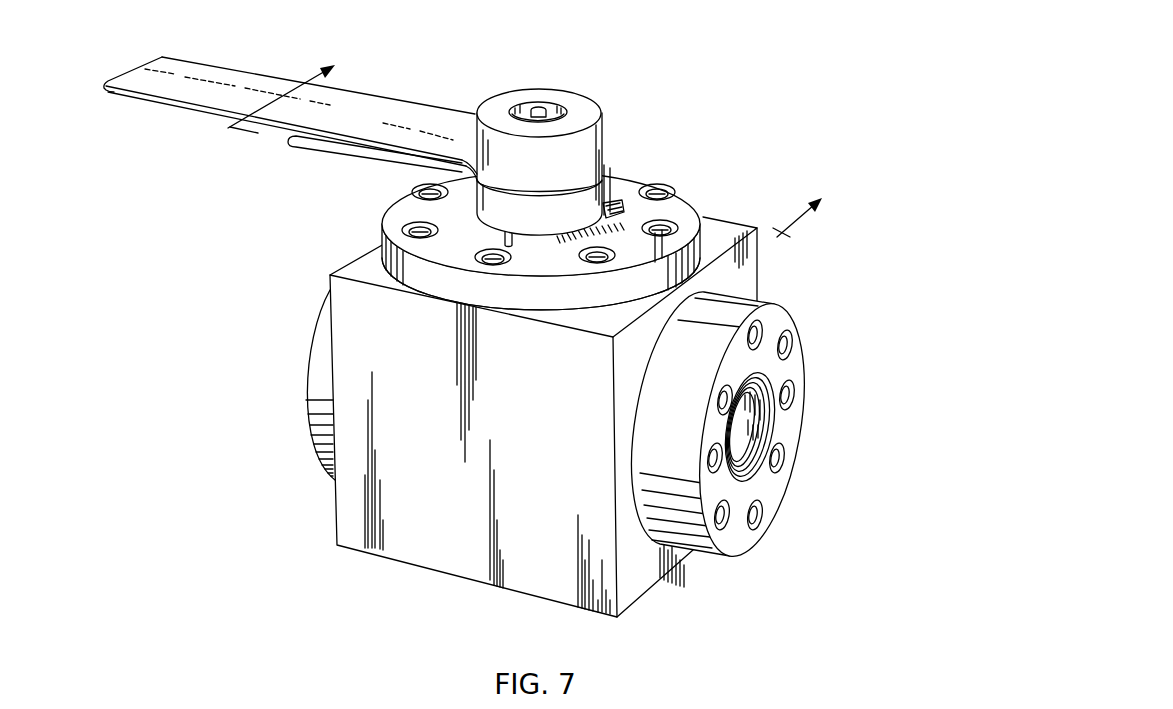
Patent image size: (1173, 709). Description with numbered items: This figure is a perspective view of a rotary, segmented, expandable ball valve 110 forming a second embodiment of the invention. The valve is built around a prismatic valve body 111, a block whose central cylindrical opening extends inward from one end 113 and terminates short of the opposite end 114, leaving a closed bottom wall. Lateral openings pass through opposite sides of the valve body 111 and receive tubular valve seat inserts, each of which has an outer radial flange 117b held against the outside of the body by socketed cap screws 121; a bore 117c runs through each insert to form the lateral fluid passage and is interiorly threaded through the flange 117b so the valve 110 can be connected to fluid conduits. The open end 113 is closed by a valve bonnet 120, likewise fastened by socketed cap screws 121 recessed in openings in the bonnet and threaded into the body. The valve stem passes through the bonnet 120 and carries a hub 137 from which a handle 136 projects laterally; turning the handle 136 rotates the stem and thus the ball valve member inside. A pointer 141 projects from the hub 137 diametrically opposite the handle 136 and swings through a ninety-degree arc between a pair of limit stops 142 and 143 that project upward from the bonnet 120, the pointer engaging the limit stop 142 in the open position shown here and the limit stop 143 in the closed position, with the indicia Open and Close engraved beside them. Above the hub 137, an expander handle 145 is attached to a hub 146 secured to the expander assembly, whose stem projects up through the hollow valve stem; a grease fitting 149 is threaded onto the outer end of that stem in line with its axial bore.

The rotary segmented expandable ball valve 110 is at (716, 102).
The prismatic valve body 111 is at (745, 278).
The open end of the valve body 113 is at (717, 227).
The opposite end of the valve body 114 is at (648, 578).
The outer radial flange 117b is at (308, 422).
The bore 117c is at (747, 437).
The valve bonnet 120 is at (622, 177).
The socketed cap screws 121 is at (668, 230).
The handle 136 is at (317, 148).
The hub 137 is at (467, 203).
The pointer 141 is at (622, 207).
The limit stop 142 is at (600, 205).
The limit stop 143 is at (382, 240).
The expander handle 145 is at (205, 68).
The hub 146 is at (493, 92).
The grease fitting 149 is at (540, 106).